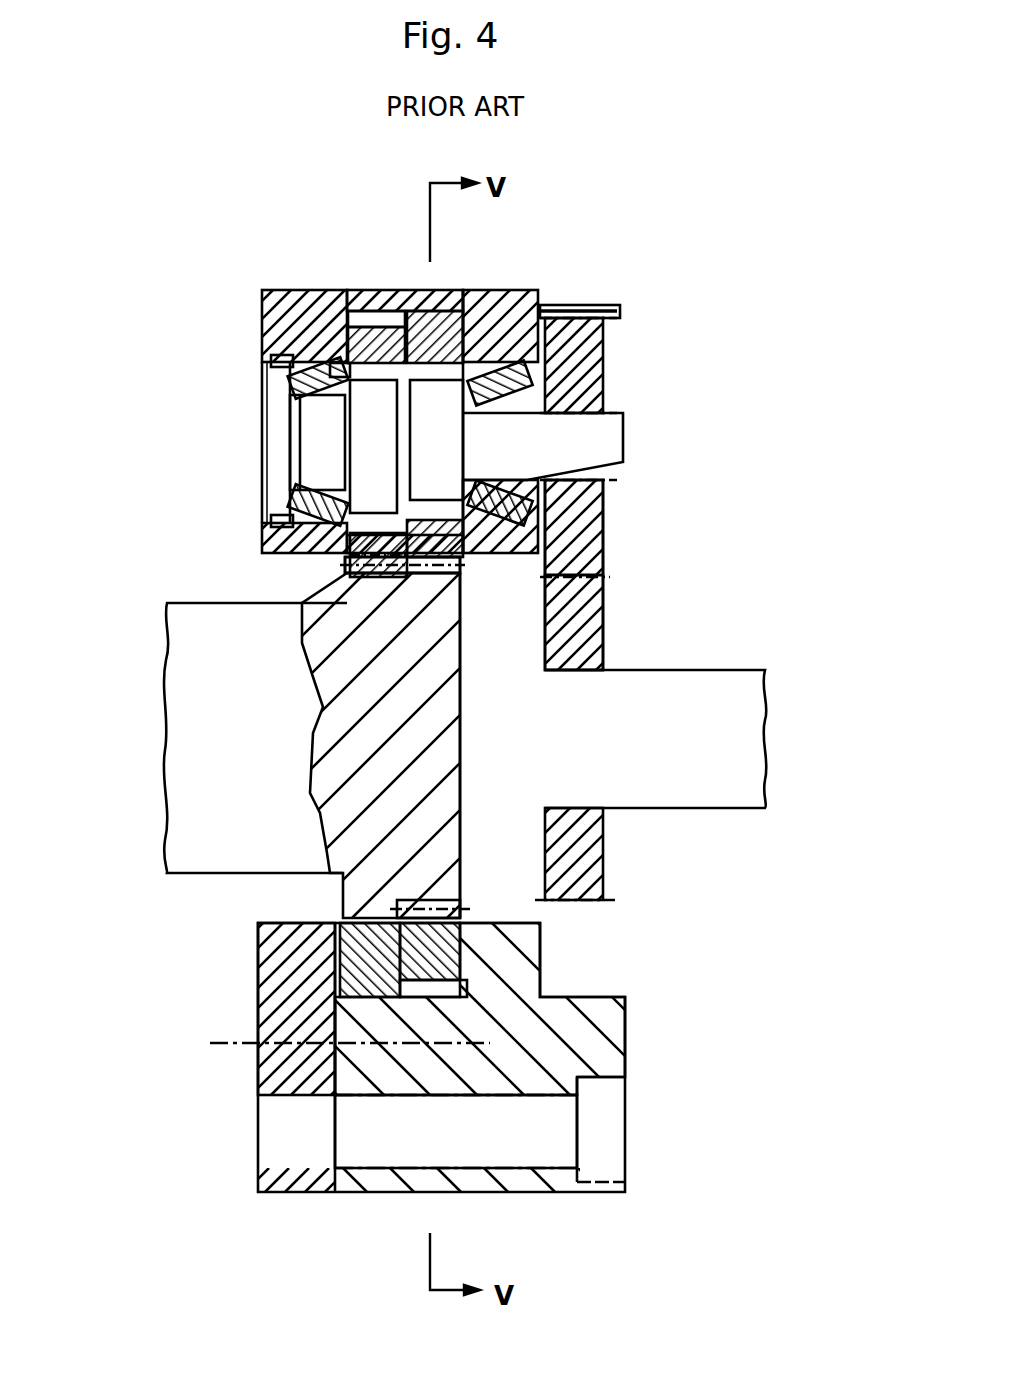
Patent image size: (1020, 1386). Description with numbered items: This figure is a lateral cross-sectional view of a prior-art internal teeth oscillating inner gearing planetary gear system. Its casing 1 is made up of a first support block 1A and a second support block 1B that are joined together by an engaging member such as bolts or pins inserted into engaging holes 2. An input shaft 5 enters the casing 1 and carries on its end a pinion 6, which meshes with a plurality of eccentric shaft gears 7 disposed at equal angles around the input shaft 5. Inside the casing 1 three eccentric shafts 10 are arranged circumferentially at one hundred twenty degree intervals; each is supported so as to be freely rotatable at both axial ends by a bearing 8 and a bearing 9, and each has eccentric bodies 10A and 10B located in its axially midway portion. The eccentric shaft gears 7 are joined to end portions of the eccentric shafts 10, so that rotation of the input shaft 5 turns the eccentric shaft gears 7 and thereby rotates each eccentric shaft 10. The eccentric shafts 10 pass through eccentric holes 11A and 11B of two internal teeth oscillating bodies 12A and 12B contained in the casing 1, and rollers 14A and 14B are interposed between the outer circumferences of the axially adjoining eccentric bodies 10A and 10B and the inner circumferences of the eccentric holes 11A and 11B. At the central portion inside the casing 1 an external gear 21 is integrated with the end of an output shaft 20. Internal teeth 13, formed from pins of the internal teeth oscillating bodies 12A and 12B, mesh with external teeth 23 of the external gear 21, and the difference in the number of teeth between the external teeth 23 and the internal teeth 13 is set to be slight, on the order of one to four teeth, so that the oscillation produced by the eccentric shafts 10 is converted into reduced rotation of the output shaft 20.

The casing 1 is at (340, 1195).
The first support block 1A is at (587, 1035).
The second support block 1B is at (260, 1090).
The engaging holes 2 is at (275, 1197).
The input shaft 5 is at (688, 700).
The pinion 6 is at (604, 588).
The eccentric shaft gears 7 is at (604, 515).
The bearing 8 is at (618, 462).
The bearing 9 is at (262, 303).
The eccentric shafts 10 is at (604, 402).
The eccentric body 10A is at (578, 292).
The eccentric body 10B is at (330, 507).
The eccentric hole 11A is at (461, 568).
The eccentric hole 11B is at (397, 573).
The internal teeth oscillating body 12A is at (475, 292).
The internal teeth oscillating body 12B is at (342, 292).
The internal teeth 13 is at (345, 585).
The rollers 14A is at (330, 468).
The rollers 14B is at (335, 422).
The output shaft 20 is at (228, 858).
The external gear 21 is at (433, 890).
The external teeth 23 is at (402, 565).